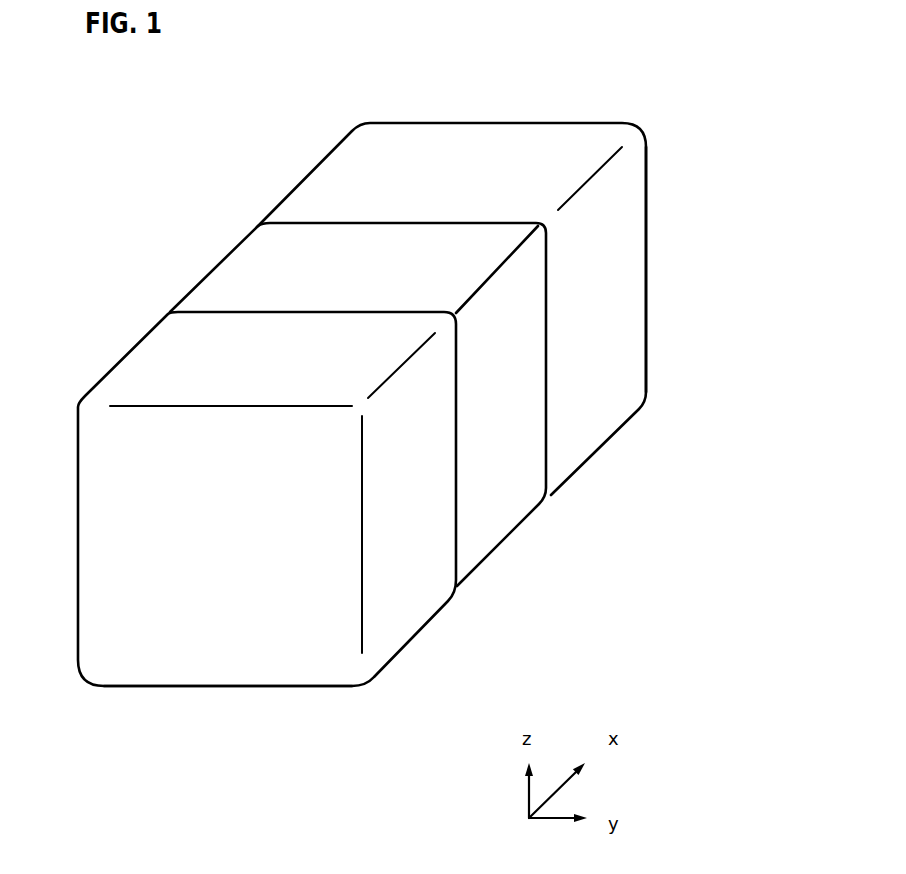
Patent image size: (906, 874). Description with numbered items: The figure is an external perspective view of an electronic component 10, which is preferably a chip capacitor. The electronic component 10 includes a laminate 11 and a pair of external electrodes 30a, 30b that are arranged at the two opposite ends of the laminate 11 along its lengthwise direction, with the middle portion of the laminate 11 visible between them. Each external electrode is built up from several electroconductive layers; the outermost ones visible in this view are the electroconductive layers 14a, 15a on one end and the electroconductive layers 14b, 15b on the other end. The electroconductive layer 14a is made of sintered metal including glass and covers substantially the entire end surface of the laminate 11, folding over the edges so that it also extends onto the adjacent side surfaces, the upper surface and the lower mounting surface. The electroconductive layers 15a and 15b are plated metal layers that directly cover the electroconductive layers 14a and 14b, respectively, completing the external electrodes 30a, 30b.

The electronic component 10 is at (196, 104).
The laminate 11 is at (201, 268).
The external electrode 30a is at (101, 359).
The external electrode 30b is at (298, 162).
The electroconductive layer 14a is at (228, 701).
The electroconductive layer 15a is at (197, 658).
The electroconductive layer 14b is at (709, 269).
The electroconductive layer 15b is at (646, 316).